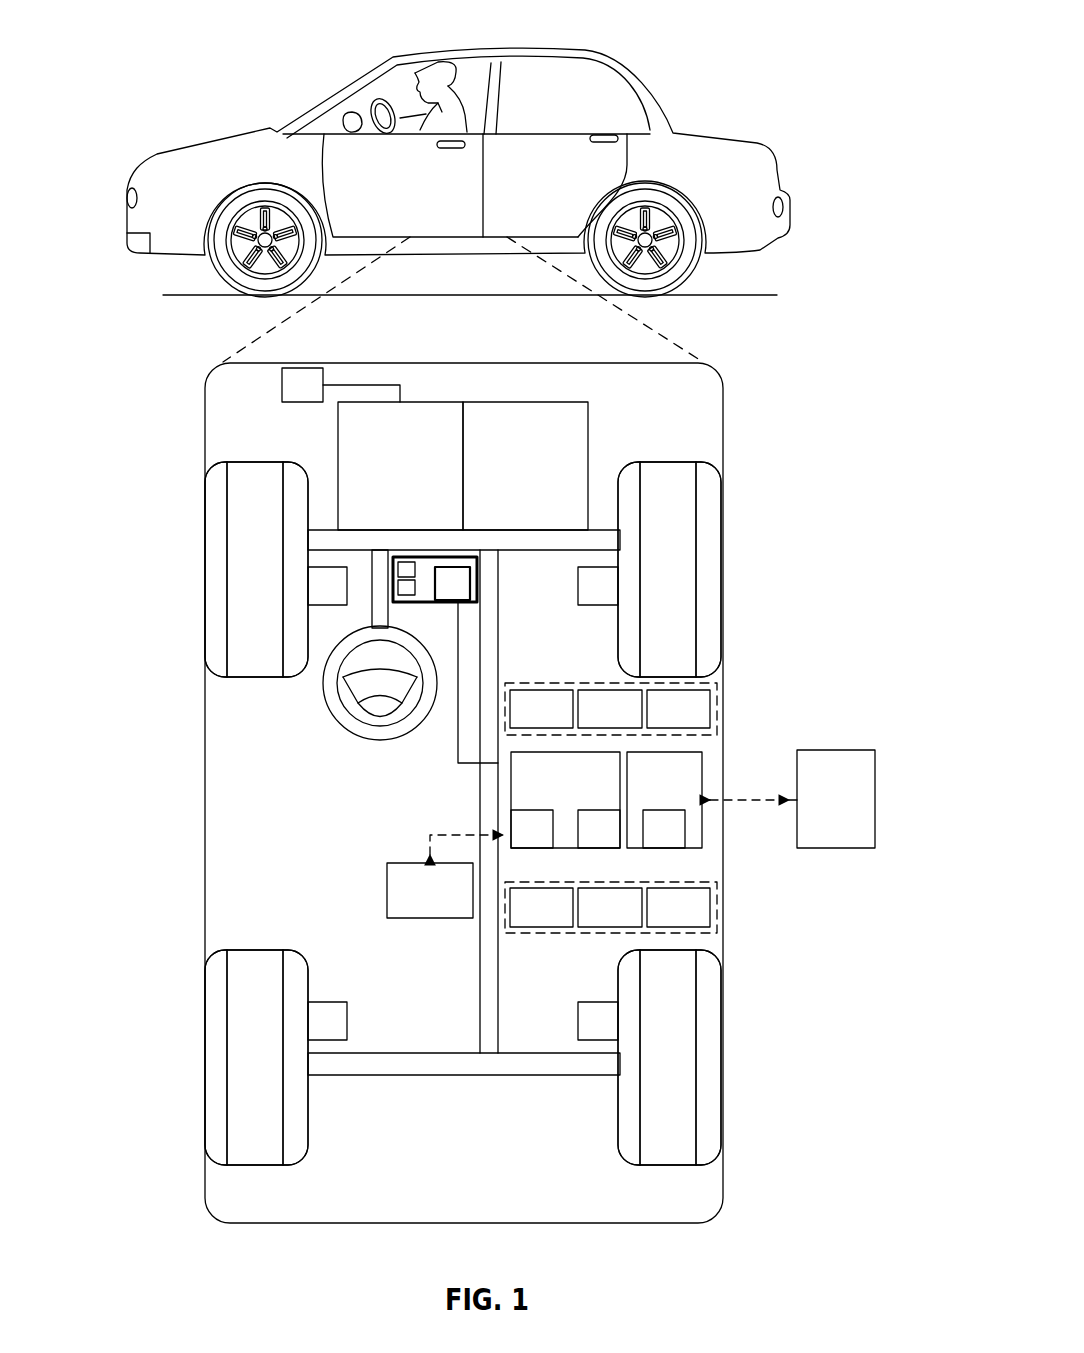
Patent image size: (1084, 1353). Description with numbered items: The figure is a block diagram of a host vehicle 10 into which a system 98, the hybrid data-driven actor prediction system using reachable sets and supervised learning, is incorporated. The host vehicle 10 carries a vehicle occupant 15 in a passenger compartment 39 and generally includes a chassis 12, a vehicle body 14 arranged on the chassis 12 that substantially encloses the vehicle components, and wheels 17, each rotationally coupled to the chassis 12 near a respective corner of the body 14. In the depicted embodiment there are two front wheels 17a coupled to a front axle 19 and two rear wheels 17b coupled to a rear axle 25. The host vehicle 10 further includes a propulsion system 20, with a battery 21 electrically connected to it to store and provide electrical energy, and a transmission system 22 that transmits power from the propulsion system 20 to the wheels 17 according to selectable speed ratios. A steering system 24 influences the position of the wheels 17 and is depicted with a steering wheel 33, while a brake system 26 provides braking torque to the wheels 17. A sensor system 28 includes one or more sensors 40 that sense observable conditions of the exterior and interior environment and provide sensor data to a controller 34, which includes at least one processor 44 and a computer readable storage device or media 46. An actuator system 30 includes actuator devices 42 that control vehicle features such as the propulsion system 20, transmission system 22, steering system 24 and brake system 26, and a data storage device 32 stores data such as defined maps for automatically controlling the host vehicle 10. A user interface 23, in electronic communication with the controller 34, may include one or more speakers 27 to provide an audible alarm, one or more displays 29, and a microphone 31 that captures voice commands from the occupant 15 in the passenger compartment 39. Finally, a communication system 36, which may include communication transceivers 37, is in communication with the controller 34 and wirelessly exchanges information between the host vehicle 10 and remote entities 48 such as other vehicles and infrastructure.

The host vehicle 10 is at (458, 181).
The chassis 12 is at (480, 958).
The vehicle body 14 is at (205, 765).
The vehicle occupant 15 is at (441, 62).
The wheels 17 is at (255, 462).
The front wheels 17a is at (215, 570).
The rear wheels 17b is at (215, 1057).
The front axle 19 is at (563, 553).
The propulsion system 20 is at (387, 464).
The battery 21 is at (303, 368).
The transmission system 22 is at (512, 464).
The user interface 23 is at (455, 557).
The steering system 24 is at (399, 611).
The rear axle 25 is at (525, 1053).
The brake system 26 is at (314, 599).
The speakers 27 is at (407, 562).
The sensor system 28 is at (573, 683).
The displays 29 is at (398, 590).
The actuator system 30 is at (615, 933).
The microphone 31 is at (465, 599).
The data storage device 32 is at (417, 905).
The steering wheel 33 is at (323, 683).
The controller 34 is at (552, 796).
The communication system 36 is at (652, 796).
The communication transceivers 37 is at (651, 843).
The passenger compartment 39 is at (513, 84).
The sensors 40 is at (528, 722).
The actuator devices 42 is at (528, 921).
The processor 44 is at (519, 843).
The computer readable storage device or media 46 is at (586, 843).
The remote entities 48 is at (822, 814).
The system 98 is at (446, 787).